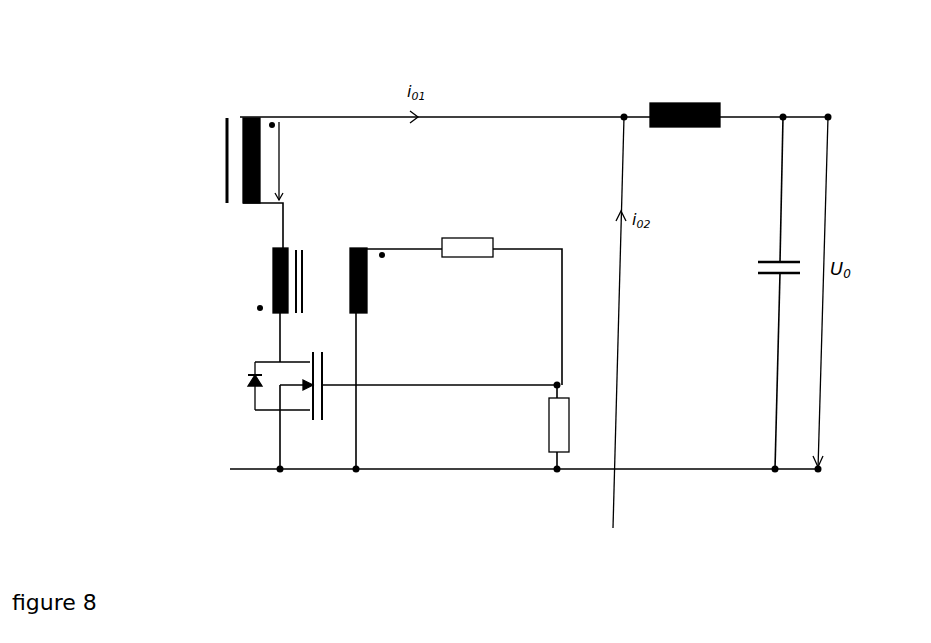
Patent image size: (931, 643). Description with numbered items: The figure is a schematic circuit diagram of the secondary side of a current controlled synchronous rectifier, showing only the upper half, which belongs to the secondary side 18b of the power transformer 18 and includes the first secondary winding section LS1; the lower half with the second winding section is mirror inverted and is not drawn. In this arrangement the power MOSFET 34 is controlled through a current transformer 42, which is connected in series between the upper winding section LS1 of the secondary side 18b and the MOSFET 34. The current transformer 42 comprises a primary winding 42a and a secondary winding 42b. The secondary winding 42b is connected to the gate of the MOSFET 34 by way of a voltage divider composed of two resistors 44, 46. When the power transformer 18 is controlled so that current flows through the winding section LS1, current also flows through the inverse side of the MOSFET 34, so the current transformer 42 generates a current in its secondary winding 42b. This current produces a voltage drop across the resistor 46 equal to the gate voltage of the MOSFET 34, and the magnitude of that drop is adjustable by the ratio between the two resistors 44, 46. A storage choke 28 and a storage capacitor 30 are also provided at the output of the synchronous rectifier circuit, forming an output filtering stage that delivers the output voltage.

The power transformer 18 is at (213, 107).
The secondary side 18b is at (260, 100).
The current transformer 42 is at (345, 203).
The primary winding 42a is at (273, 253).
The secondary winding 42b is at (368, 300).
The resistor 44 is at (480, 247).
The resistor 46 is at (555, 412).
The power MOSFET 34 is at (250, 395).
The storage choke 28 is at (705, 103).
The storage capacitor 30 is at (782, 257).